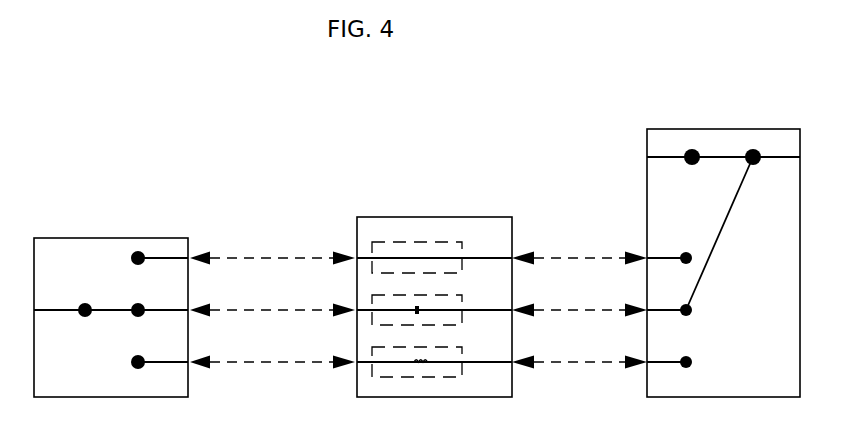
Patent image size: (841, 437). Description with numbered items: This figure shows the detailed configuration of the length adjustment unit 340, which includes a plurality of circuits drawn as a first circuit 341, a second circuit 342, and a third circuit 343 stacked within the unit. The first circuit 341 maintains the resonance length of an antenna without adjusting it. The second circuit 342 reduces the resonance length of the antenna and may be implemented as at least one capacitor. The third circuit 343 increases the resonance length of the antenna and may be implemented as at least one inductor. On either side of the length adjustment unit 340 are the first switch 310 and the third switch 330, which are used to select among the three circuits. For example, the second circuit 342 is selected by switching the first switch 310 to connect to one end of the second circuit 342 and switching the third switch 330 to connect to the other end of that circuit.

The first switch 310 is at (723, 129).
The third switch 330 is at (113, 238).
The length adjustment unit 340 is at (417, 217).
The first circuit 341 is at (462, 247).
The second circuit 342 is at (462, 317).
The third circuit 343 is at (462, 370).